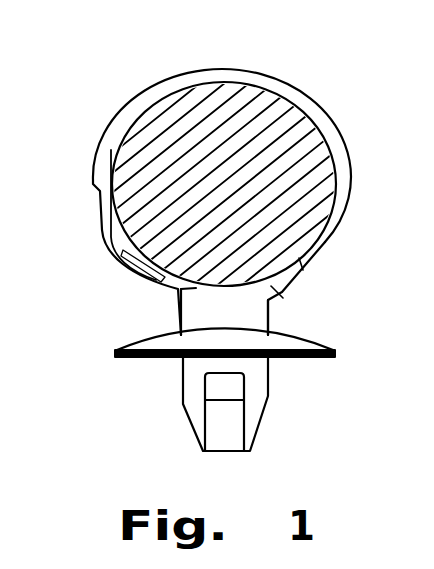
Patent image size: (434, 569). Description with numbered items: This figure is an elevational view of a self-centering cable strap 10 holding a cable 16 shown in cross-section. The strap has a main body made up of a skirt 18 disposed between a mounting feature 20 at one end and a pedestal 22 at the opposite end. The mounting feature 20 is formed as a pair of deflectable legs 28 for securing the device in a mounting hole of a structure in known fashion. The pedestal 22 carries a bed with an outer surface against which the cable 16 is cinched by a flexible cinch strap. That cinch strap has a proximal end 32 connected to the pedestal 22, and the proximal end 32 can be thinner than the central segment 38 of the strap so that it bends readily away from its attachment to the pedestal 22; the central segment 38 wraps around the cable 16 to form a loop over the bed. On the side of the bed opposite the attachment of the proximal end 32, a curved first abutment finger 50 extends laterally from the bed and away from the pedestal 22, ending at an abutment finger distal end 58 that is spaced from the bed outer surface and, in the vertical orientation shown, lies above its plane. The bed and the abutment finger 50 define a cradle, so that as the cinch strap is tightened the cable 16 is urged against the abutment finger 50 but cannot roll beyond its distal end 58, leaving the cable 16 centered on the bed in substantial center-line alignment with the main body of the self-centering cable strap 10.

The self-centering cable strap 10 is at (305, 388).
The cable 16 is at (298, 145).
The skirt 18 is at (309, 341).
The mounting feature 20 is at (183, 376).
The pedestal 22 is at (182, 317).
The deflectable legs 28 is at (227, 419).
The proximal end 32 is at (101, 217).
The central segment 38 is at (200, 69).
The first abutment finger 50 is at (276, 290).
The abutment finger distal end 58 is at (326, 244).